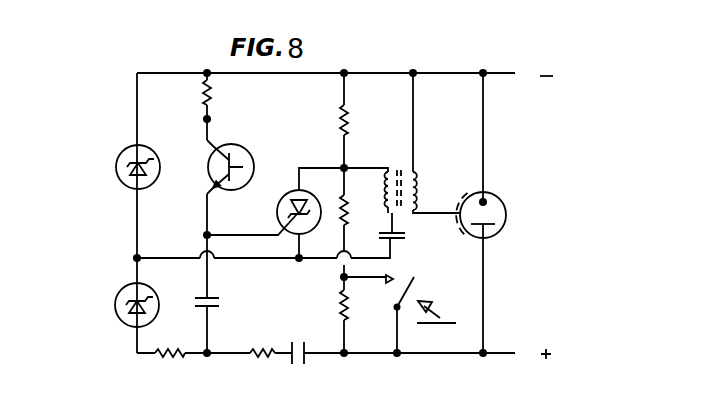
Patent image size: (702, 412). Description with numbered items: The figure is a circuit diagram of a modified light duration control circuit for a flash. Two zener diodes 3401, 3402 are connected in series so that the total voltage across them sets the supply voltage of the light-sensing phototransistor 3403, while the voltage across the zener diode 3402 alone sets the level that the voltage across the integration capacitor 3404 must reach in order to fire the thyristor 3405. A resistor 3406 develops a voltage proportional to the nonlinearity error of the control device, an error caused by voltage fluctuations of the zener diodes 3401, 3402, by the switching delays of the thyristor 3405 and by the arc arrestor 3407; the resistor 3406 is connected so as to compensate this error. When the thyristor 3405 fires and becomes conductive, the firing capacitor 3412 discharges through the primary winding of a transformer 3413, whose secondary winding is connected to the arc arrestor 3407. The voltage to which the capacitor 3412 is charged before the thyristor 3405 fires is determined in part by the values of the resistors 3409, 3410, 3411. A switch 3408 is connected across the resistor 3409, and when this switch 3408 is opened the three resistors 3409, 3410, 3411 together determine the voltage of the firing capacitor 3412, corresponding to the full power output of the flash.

The zener diode 3401 is at (109, 167).
The zener diode 3402 is at (108, 305).
The light-sensing phototransistor 3403 is at (240, 157).
The integration capacitor 3404 is at (234, 308).
The thyristor 3405 is at (269, 212).
The resistor 3406 is at (169, 367).
The arc arrestor 3407 is at (509, 215).
The switch 3408 is at (431, 315).
The resistor 3409 is at (314, 305).
The resistor 3410 is at (357, 206).
The resistor 3411 is at (370, 121).
The capacitor 3412 is at (415, 239).
The transformer 3413 is at (430, 180).